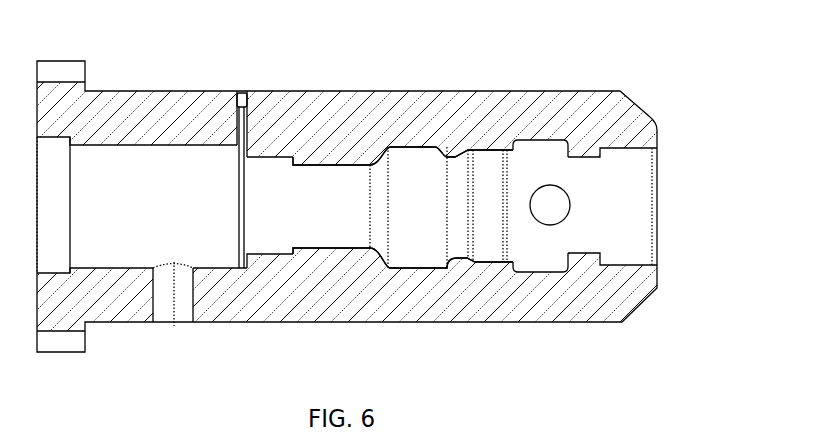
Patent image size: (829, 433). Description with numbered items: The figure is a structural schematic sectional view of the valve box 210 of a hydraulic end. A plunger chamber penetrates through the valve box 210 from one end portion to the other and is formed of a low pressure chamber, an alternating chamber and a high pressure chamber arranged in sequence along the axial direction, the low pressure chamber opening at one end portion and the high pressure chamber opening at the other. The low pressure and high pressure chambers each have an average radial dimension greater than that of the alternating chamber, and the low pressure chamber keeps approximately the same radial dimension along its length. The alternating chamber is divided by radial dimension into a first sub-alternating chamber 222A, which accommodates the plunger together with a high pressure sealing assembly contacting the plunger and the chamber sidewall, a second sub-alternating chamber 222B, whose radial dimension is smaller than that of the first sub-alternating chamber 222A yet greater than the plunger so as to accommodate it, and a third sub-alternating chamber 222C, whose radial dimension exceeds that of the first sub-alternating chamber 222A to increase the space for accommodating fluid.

The valve box 210 is at (275, 123).
The first sub-alternating chamber 222A is at (275, 230).
The second sub-alternating chamber 222B is at (338, 232).
The third sub-alternating chamber 222C is at (425, 232).